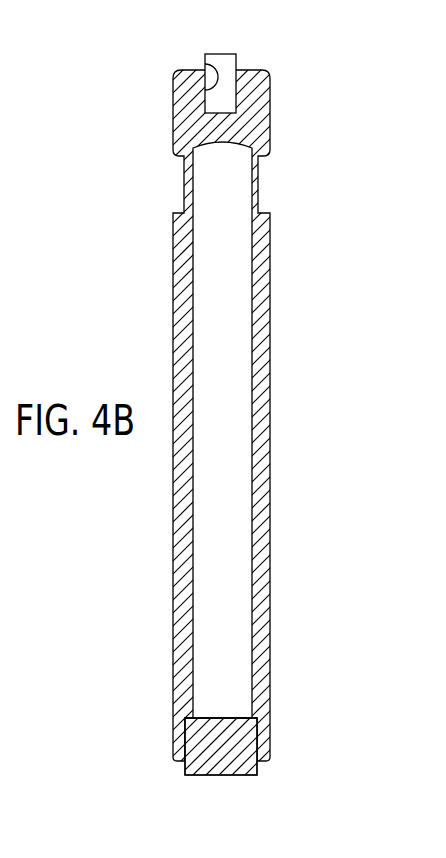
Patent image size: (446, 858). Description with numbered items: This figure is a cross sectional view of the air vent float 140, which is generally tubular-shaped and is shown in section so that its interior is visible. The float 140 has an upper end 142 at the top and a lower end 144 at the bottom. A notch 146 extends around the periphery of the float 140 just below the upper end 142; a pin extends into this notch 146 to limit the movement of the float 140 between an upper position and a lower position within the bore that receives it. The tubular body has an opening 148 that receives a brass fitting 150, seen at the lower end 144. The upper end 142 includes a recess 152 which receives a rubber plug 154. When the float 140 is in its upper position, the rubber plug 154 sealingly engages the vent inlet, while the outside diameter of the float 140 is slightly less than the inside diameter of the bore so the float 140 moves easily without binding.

The air vent float 140 is at (150, 259).
The upper end 142 is at (270, 100).
The lower end 144 is at (263, 763).
The notch 146 is at (258, 183).
The opening 148 is at (176, 726).
The brass fitting 150 is at (203, 764).
The recess 152 is at (206, 61).
The rubber plug 154 is at (227, 62).